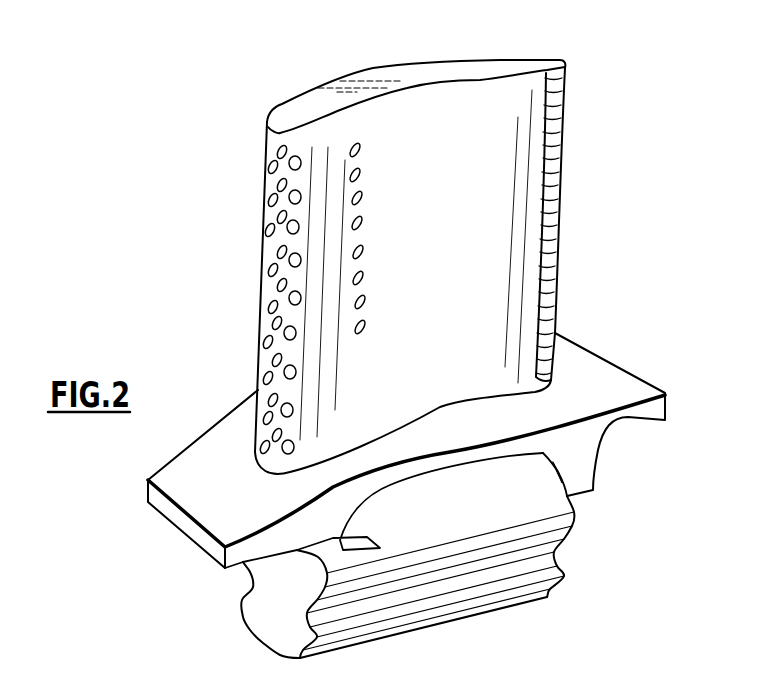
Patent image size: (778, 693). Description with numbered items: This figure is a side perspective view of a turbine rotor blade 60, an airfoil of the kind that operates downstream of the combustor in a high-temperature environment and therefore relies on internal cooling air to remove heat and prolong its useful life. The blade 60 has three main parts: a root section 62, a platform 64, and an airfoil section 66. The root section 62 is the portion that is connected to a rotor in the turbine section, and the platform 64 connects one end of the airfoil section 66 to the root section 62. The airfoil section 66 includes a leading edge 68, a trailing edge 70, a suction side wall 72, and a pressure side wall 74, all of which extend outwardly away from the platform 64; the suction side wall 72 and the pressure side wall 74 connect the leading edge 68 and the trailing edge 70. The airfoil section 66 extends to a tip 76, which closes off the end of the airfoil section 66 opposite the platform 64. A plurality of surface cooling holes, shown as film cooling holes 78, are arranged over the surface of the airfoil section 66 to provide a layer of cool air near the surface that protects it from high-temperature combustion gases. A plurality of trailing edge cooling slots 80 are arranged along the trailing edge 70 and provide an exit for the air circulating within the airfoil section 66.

The turbine rotor blade 60 is at (178, 174).
The root section 62 is at (268, 612).
The platform 64 is at (192, 489).
The airfoil section 66 is at (488, 201).
The leading edge 68 is at (267, 245).
The trailing edge 70 is at (565, 132).
The suction side wall 72 is at (362, 69).
The pressure side wall 74 is at (507, 97).
The tip 76 is at (302, 108).
The film cooling holes 78 is at (272, 197).
The trailing edge cooling slots 80 is at (553, 211).